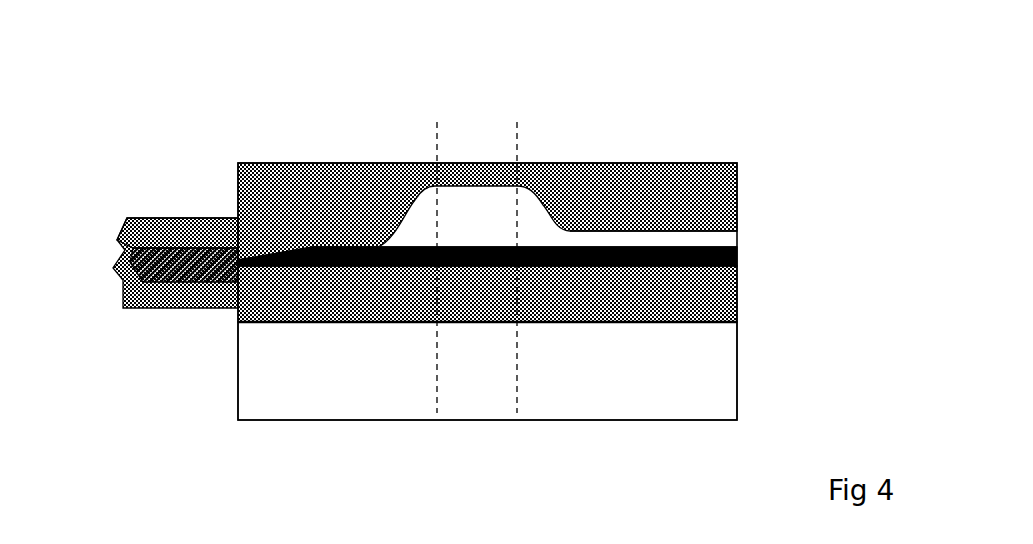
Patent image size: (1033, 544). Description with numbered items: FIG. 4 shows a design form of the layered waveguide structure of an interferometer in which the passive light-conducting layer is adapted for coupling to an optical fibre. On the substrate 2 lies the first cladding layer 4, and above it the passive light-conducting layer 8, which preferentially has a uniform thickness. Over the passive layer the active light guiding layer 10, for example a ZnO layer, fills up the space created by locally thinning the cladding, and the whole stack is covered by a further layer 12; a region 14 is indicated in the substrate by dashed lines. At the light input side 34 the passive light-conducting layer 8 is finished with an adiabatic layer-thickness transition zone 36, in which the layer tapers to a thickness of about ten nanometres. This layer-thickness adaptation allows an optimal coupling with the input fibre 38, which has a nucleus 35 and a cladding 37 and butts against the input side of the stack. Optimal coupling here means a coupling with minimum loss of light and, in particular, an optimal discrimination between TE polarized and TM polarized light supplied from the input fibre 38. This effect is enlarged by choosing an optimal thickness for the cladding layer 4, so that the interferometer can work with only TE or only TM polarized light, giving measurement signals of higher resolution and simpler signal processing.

The substrate 2 is at (718, 407).
The first cladding layer 4 is at (707, 308).
The passive light guiding layer 8 is at (738, 258).
The active light guiding layer 10 is at (727, 237).
The cover layer 12 is at (263, 195).
The waveguide channel 14 is at (477, 267).
The light input side 34 is at (234, 128).
The nucleus 35 is at (163, 285).
The adiabatic layer-thickness transition zone 36 is at (288, 247).
The cladding 37 is at (198, 300).
The input fibre 38 is at (134, 298).